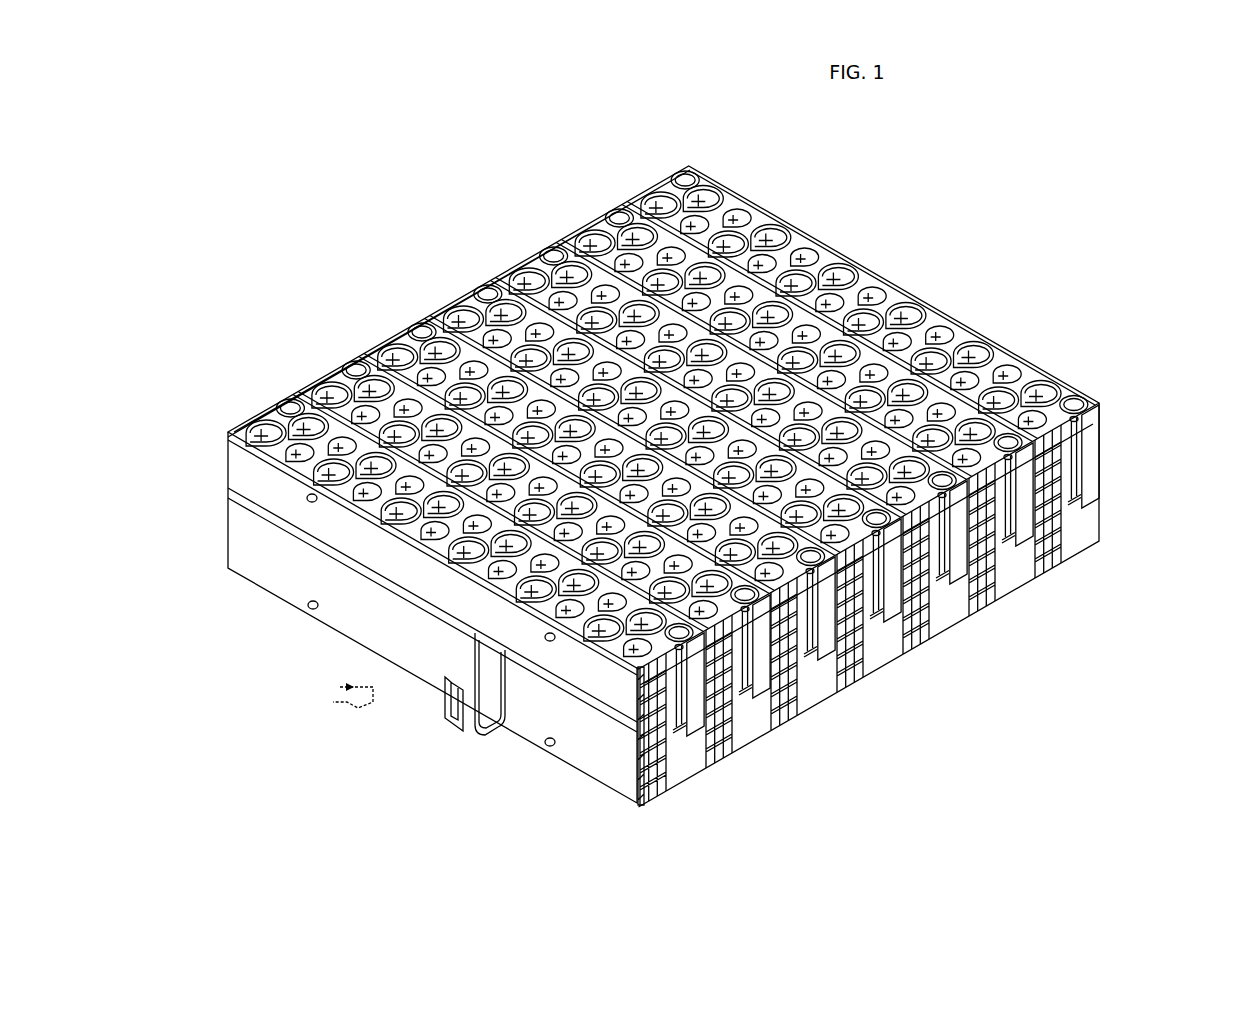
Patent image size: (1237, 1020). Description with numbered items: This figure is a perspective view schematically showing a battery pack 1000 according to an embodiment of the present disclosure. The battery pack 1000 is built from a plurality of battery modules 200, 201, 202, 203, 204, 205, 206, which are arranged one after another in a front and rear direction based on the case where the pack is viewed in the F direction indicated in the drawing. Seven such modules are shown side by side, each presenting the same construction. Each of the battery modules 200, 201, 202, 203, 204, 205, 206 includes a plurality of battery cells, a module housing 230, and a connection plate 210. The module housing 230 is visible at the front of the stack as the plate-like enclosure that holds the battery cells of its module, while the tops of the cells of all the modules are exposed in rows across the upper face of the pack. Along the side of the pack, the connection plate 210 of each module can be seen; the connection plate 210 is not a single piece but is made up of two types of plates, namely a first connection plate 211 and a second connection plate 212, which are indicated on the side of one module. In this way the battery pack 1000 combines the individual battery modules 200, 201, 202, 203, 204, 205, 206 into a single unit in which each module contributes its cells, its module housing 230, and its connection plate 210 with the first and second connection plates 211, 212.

The battery pack 1000 is at (350, 149).
The battery module 200 is at (648, 178).
The battery module 201 is at (580, 213).
The battery module 202 is at (514, 251).
The battery module 203 is at (448, 290).
The battery module 204 is at (382, 328).
The battery module 205 is at (317, 366).
The battery module 206 is at (251, 405).
The connection plate 210 is at (1173, 363).
The first connection plate 211 is at (1027, 402).
The second connection plate 212 is at (1021, 603).
The module housing 230 is at (219, 525).